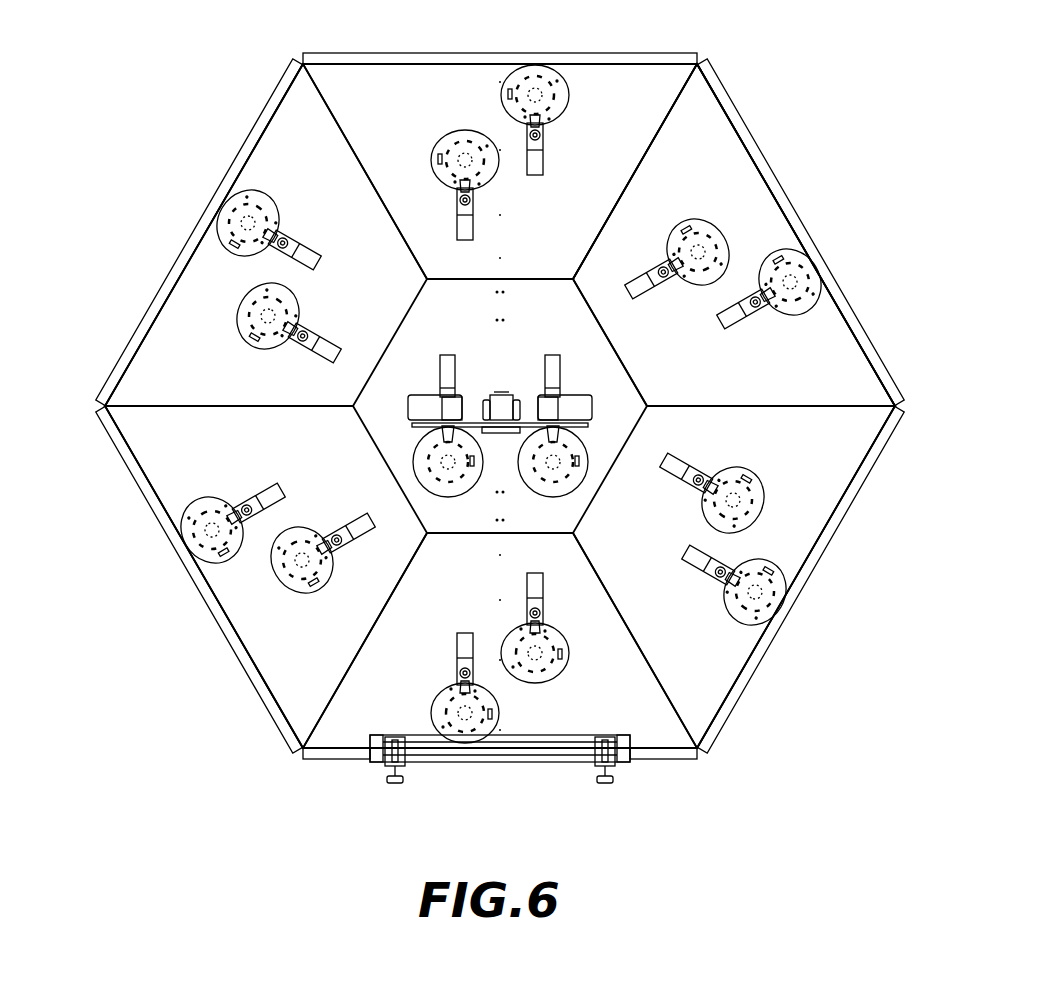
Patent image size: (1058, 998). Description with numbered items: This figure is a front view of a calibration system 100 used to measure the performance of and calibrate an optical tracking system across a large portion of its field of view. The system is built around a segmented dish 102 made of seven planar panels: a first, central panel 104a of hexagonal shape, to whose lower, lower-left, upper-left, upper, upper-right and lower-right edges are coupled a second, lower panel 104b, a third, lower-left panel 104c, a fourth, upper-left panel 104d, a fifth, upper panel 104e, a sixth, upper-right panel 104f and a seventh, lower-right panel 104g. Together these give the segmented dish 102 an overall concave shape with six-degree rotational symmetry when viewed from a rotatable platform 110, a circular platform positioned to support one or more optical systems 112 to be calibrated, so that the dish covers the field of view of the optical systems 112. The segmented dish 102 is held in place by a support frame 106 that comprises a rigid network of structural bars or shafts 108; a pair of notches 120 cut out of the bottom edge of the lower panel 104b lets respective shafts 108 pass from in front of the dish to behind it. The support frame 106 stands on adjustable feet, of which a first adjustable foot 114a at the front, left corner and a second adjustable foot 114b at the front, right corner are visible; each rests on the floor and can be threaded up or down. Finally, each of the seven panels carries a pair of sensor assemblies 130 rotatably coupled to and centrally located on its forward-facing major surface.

The calibration system 100 is at (219, 84).
The segmented dish 102 is at (773, 165).
The first, central panel 104a is at (562, 313).
The second, lower panel 104b is at (648, 717).
The third, lower-left panel 104c is at (272, 648).
The fourth, upper-left panel 104d is at (170, 385).
The fifth, upper panel 104e is at (392, 90).
The sixth, upper-right panel 104f is at (807, 380).
The seventh, lower-right panel 104g is at (810, 440).
The support frame 106 is at (492, 766).
The structural bars or shafts 108 is at (477, 750).
The rotatable platform 110 is at (413, 427).
The optical systems 112 is at (502, 405).
The first adjustable foot 114a is at (395, 785).
The second adjustable foot 114b is at (605, 785).
The notches 120 is at (375, 762).
The sensor assemblies 130 is at (470, 130).